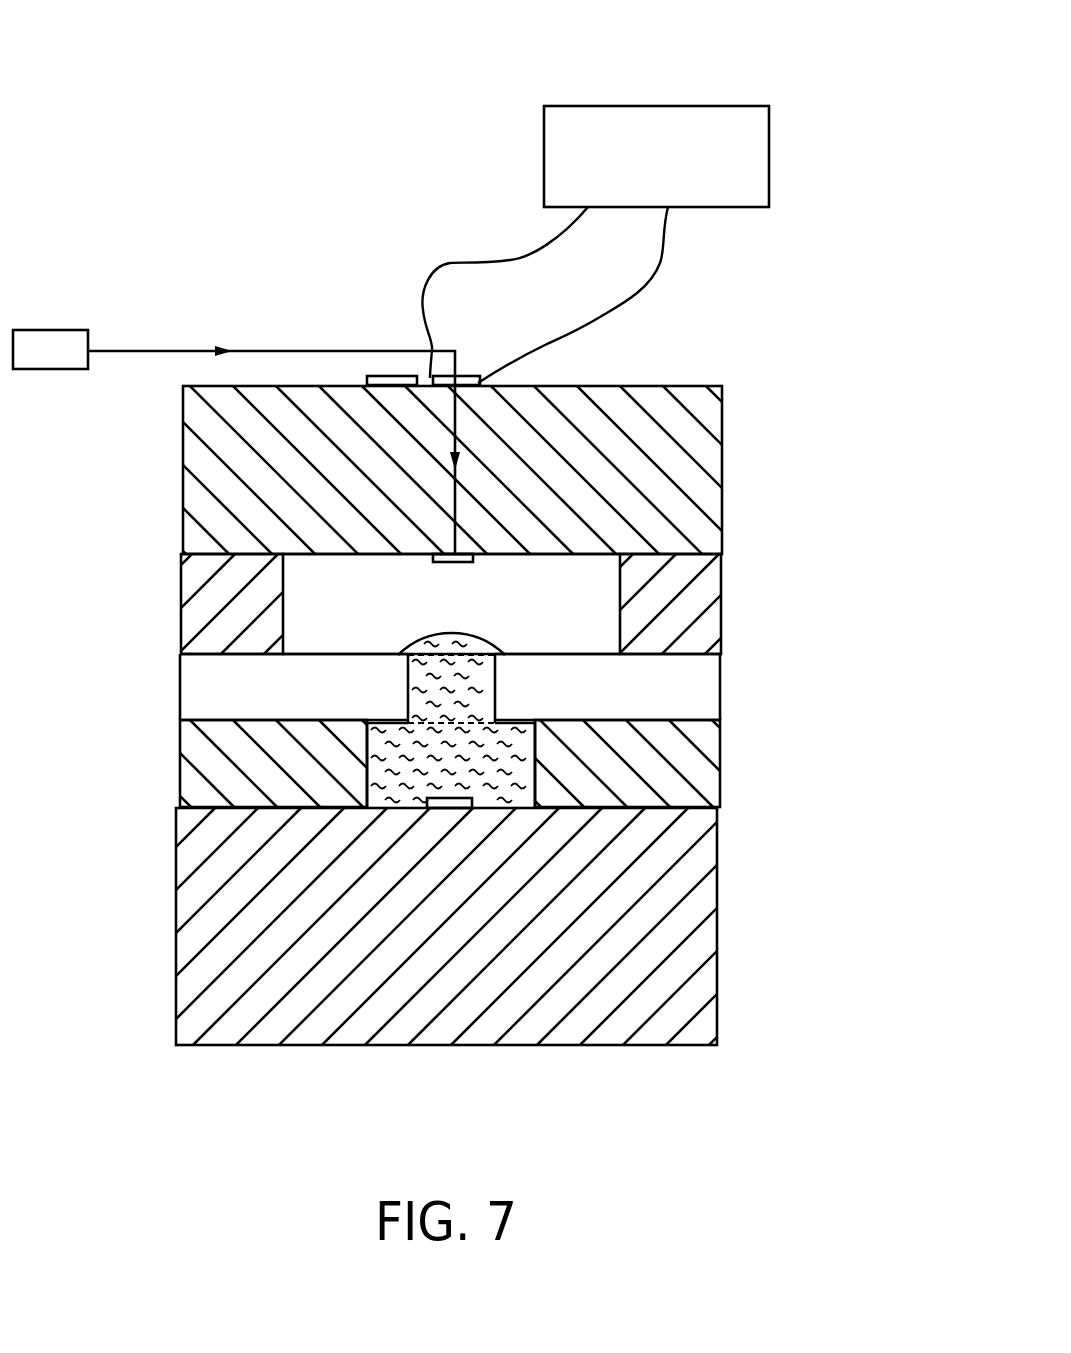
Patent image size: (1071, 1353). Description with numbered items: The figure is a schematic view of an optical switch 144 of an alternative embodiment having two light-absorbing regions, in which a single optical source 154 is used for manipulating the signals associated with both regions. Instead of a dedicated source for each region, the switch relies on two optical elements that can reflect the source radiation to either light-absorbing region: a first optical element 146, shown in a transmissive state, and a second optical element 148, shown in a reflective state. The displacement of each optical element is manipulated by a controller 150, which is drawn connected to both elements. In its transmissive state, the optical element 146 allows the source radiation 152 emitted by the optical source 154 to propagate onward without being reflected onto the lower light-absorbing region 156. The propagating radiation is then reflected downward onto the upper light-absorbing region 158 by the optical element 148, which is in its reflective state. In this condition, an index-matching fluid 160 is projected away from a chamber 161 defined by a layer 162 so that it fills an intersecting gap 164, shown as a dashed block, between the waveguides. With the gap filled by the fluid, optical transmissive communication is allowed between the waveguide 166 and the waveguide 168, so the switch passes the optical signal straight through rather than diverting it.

The optical switch 144 is at (168, 78).
The first optical element 146 is at (375, 376).
The second optical element 148 is at (418, 378).
The controller 150 is at (660, 106).
The source radiation 152 is at (163, 350).
The optical source 154 is at (58, 330).
The lower light-absorbing region 156 is at (467, 805).
The upper light-absorbing region 158 is at (456, 554).
The index-matching fluid 160 is at (528, 778).
The chamber 161 is at (580, 607).
The layer 162 is at (710, 592).
The intersecting gap 164 is at (417, 705).
The waveguide 166 is at (195, 690).
The waveguide 168 is at (705, 712).